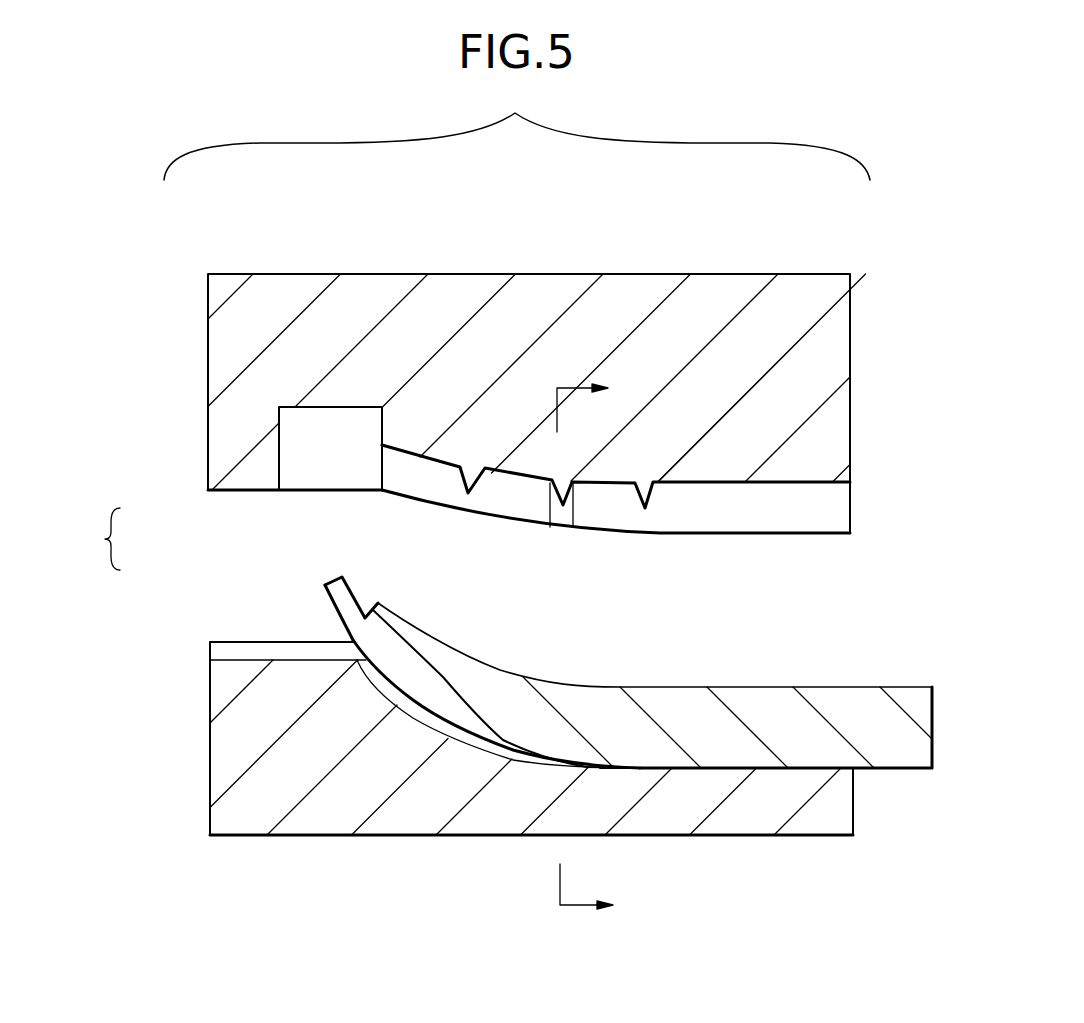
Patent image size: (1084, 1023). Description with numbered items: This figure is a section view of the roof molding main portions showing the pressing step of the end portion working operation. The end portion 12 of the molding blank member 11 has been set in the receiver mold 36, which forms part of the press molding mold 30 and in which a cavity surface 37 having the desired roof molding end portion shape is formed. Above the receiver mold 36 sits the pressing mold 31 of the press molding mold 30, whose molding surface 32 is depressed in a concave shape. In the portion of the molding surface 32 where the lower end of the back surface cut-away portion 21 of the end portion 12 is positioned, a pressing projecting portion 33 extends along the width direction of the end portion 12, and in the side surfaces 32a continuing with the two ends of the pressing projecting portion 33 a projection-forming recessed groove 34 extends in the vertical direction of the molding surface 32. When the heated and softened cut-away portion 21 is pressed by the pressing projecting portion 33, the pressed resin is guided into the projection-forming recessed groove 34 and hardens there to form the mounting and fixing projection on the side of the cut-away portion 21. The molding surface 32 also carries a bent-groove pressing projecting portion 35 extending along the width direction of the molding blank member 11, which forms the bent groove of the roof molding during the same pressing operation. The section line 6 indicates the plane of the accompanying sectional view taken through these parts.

The section line VI-VI 6 is at (577, 650).
The molding blank member 11 is at (885, 687).
The end portion 12 is at (335, 593).
The cut-away portion 21 is at (658, 697).
The press molding mold 30 is at (95, 539).
The pressing mold 31 is at (225, 443).
The molding surface 32 is at (795, 483).
The side surfaces 32a is at (717, 531).
The pressing projecting portion 33 is at (555, 485).
The projection-forming recessed groove 34 is at (562, 506).
The bent-groove pressing projecting portion 35 is at (467, 494).
The receiver mold 36 is at (220, 693).
The cavity surface 37 is at (522, 757).